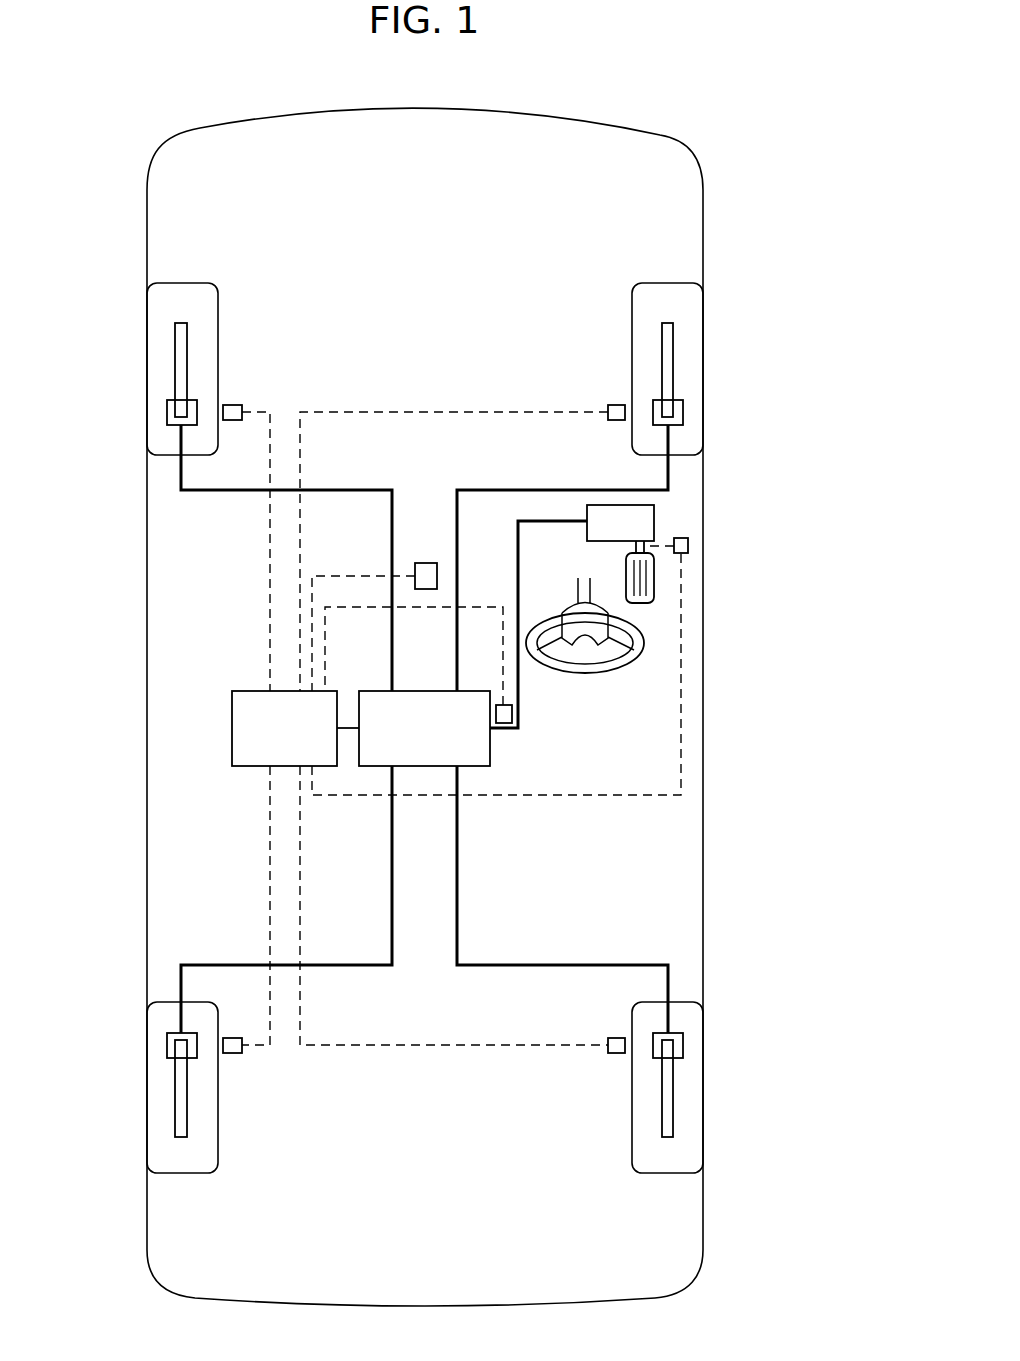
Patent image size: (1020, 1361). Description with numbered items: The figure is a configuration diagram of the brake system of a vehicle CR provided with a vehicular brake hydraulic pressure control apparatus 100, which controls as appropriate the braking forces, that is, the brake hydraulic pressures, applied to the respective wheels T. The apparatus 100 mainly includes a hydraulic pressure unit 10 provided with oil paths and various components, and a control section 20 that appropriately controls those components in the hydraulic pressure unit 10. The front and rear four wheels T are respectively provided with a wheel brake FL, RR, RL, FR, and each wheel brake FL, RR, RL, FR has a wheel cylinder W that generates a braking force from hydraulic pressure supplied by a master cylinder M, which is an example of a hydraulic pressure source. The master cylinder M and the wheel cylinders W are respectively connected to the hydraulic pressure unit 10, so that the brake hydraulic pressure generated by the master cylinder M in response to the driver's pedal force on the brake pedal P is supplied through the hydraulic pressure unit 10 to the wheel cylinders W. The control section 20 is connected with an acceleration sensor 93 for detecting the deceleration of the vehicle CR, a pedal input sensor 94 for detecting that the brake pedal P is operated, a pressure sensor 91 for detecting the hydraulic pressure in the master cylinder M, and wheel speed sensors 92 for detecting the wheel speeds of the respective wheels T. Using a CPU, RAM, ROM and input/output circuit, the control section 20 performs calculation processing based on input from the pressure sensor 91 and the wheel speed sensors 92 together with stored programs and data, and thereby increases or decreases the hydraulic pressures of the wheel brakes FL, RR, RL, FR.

The vehicle CR is at (703, 195).
The wheel T is at (147, 315).
The wheel brake FL is at (175, 367).
The wheel brake FR is at (673, 367).
The wheel brake RL is at (175, 1088).
The wheel brake RR is at (673, 1088).
The wheel cylinder W is at (167, 413).
The wheel speed sensor 92 is at (232, 405).
The acceleration sensor 93 is at (425, 563).
The pedal input sensor 94 is at (688, 547).
The master cylinder M is at (654, 521).
The brake pedal P is at (642, 600).
The pressure sensor 91 is at (512, 713).
The hydraulic pressure unit 10 is at (421, 691).
The control section 20 is at (243, 691).
The vehicular brake hydraulic pressure control apparatus 100 is at (288, 702).